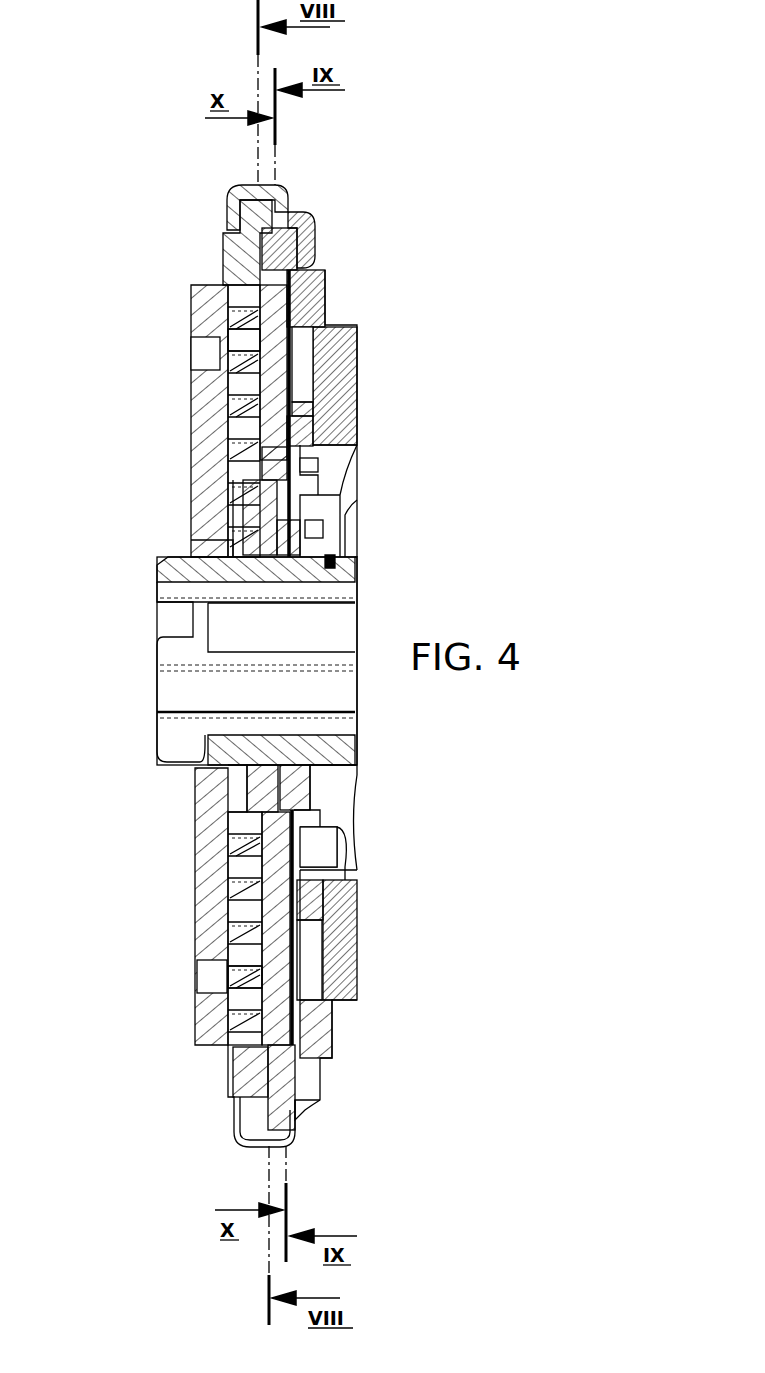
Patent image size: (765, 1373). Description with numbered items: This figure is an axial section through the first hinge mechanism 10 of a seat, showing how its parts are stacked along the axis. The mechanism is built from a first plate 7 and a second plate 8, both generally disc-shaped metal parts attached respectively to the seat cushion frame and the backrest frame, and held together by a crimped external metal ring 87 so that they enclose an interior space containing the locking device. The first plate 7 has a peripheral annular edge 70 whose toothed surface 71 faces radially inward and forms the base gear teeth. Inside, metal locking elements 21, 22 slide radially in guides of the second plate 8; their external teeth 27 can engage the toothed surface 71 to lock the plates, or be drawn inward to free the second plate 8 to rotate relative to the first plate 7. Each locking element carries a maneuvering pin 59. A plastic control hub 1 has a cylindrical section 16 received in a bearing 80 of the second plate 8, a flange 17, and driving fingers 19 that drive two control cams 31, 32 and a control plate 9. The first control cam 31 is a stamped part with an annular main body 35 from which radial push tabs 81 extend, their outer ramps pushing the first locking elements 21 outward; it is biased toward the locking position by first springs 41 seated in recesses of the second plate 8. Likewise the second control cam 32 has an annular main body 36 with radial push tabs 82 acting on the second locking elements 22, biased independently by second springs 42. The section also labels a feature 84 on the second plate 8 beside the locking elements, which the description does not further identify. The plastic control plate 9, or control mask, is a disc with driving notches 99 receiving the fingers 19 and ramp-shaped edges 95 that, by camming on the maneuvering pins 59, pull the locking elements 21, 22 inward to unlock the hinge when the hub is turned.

The control hub 1 is at (140, 726).
The first plate 7 is at (352, 276).
The second plate 8 is at (205, 243).
The control plate 9 is at (378, 464).
The first hinge mechanism 10 is at (364, 1085).
The cylindrical section 16 is at (187, 580).
The flange 17 is at (238, 528).
The driving fingers 19 is at (327, 560).
The first locking elements 21 is at (262, 1010).
The second locking elements 22 is at (247, 320).
The external teeth 27 is at (283, 250).
The first control cam 31 is at (255, 776).
The second control cam 32 is at (238, 823).
The annular main body 35 is at (300, 775).
The annular main body 36 is at (285, 793).
The first springs 41 is at (243, 400).
The second springs 42 is at (250, 905).
The maneuvering pin 59 is at (296, 428).
The edge 70 is at (300, 226).
The toothed surface 71 is at (305, 268).
The bearing 80 is at (200, 553).
The radial push tabs 81 is at (345, 872).
The radial push tabs 82 is at (247, 458).
The recess 84 is at (243, 357).
The external metal ring 87 is at (290, 190).
The ramp-shaped peripheral edges 95 is at (303, 408).
The driving notches 99 is at (340, 572).